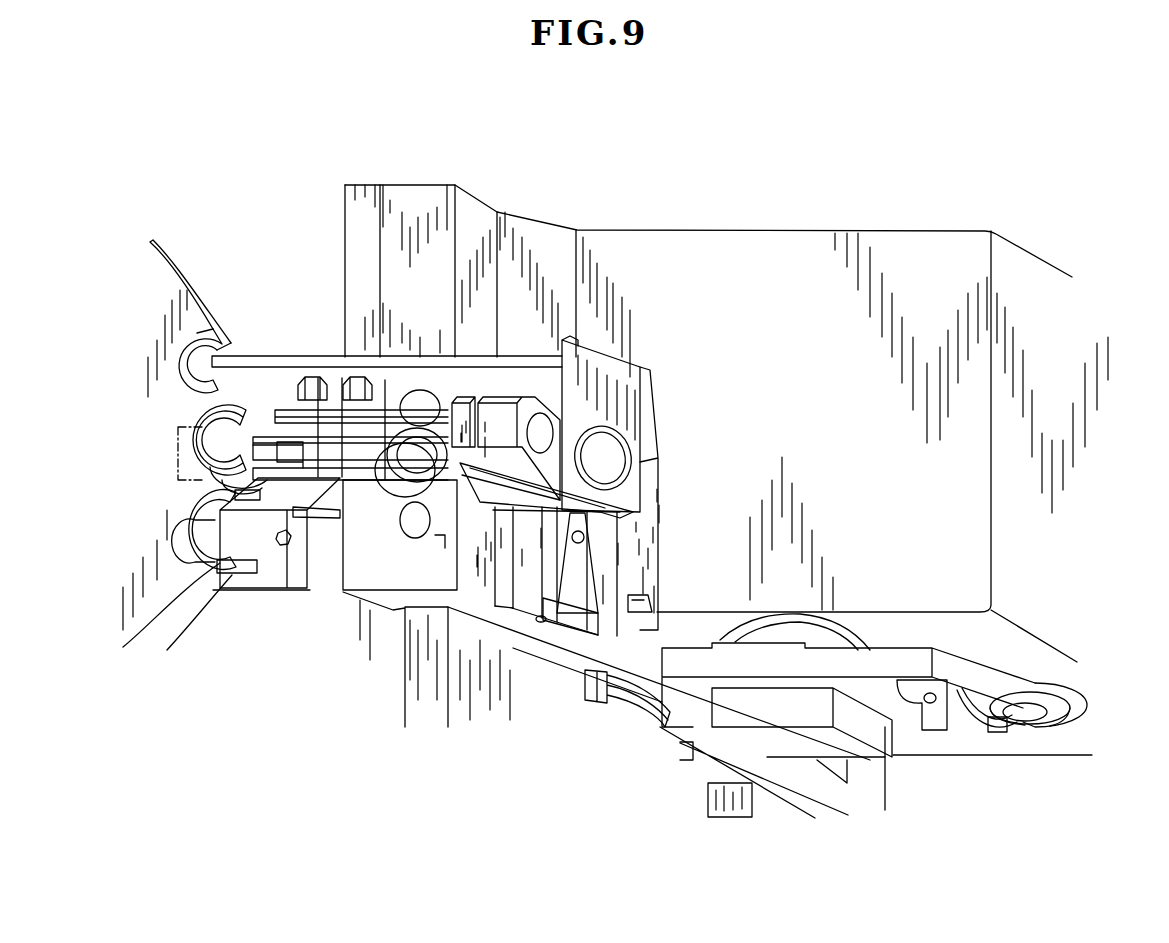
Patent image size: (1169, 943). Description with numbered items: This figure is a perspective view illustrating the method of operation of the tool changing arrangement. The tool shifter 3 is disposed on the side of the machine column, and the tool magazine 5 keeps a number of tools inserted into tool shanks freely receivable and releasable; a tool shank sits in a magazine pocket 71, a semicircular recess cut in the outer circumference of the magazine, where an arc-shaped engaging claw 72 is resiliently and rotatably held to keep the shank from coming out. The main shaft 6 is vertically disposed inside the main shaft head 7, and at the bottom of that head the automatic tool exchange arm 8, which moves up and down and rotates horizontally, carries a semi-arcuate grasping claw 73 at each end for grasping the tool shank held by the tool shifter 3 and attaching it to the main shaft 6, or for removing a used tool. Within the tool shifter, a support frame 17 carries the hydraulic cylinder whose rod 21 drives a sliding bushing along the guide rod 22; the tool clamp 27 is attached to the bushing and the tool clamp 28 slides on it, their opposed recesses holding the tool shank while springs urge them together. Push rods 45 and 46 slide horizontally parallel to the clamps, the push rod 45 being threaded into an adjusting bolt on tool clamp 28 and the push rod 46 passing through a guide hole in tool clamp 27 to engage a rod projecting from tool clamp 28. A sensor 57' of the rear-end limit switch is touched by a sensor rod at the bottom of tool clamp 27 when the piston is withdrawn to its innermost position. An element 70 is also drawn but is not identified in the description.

The tool shifter 3 is at (578, 340).
The tool magazine 5 is at (160, 603).
The main shaft 6 is at (1050, 700).
The main shaft head 7 is at (911, 264).
The automatic tool exchange arm 8 is at (910, 662).
The support frame 17 is at (632, 367).
The rod 21 is at (325, 412).
The guide rod 22 is at (365, 478).
The tool clamp 27 is at (300, 378).
The tool clamp 28 is at (355, 378).
The push rod 45 is at (240, 492).
The push rod 46 is at (217, 521).
The sensor 57' is at (311, 646).
The screw 70 is at (541, 622).
The magazine pocket 71 is at (203, 533).
The engaging claw 72 is at (230, 577).
The grasping claw 73 is at (987, 698).